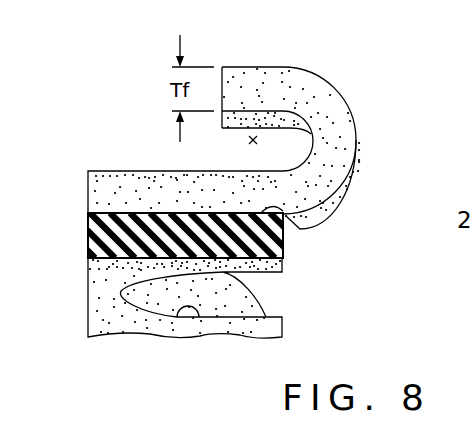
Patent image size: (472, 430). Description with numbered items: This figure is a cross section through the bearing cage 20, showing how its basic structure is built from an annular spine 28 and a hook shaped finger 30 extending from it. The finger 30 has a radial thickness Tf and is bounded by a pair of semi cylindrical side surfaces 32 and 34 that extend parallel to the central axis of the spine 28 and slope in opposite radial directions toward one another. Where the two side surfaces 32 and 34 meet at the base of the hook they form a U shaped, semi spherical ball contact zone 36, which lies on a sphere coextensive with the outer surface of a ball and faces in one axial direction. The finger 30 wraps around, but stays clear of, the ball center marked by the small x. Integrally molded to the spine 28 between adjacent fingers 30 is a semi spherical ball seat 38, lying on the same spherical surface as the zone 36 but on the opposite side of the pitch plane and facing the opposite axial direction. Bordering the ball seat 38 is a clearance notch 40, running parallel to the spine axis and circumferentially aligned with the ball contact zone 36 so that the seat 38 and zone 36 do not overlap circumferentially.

The cage 20 is at (284, 322).
The annular spine 28 is at (100, 239).
The hook shaped finger 30 is at (357, 127).
The side surface 32 is at (250, 85).
The side surface 34 is at (177, 188).
The ball contact zone 36 is at (322, 93).
The ball seat 38 is at (197, 303).
The clearance notch 40 is at (292, 224).